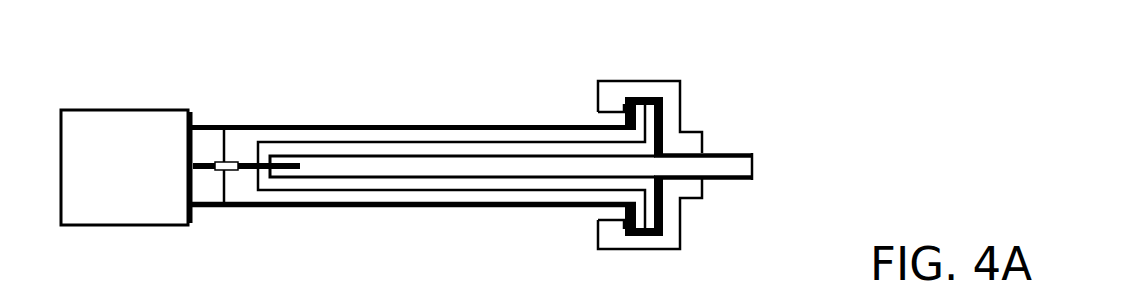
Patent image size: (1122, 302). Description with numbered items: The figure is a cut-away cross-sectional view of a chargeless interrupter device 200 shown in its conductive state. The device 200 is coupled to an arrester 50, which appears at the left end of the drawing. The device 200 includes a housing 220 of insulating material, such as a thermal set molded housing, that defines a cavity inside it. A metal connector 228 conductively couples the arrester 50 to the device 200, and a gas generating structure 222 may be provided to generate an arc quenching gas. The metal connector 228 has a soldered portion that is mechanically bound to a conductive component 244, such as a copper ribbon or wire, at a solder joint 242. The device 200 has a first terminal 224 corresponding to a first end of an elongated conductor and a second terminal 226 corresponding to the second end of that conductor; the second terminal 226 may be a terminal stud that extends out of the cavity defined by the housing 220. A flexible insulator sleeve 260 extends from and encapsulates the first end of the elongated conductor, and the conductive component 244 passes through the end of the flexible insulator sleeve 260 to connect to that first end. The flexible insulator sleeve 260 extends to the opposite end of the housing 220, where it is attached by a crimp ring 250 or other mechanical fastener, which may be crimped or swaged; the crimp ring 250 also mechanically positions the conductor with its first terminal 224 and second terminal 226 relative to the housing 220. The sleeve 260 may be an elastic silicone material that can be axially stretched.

The arrester 50 is at (125, 127).
The chargeless interrupter device 200 is at (483, 125).
The housing 220 is at (425, 208).
The gas generating structure 222 is at (216, 128).
The first terminal 224 is at (345, 170).
The second terminal 226 is at (742, 170).
The metal connector 228 is at (193, 125).
The solder joint 242 is at (235, 172).
The conductive component 244 is at (259, 157).
The crimp ring 250 is at (608, 238).
The flexible insulator sleeve 260 is at (286, 182).